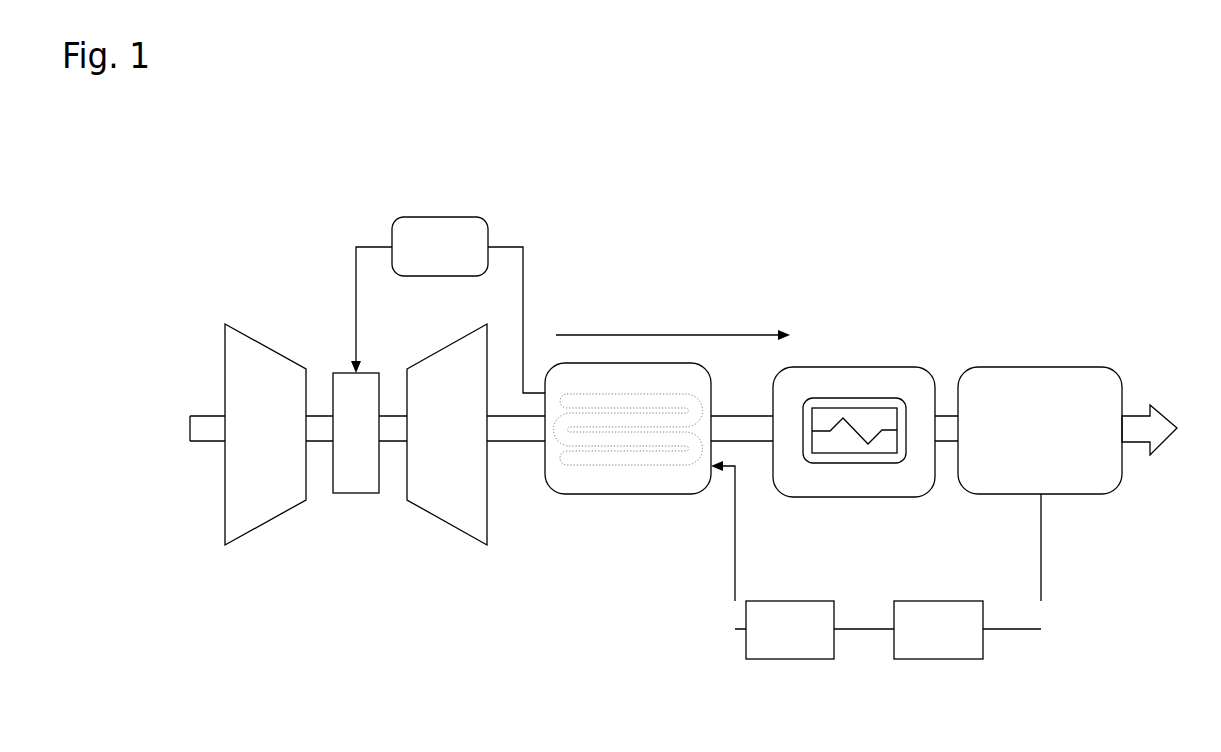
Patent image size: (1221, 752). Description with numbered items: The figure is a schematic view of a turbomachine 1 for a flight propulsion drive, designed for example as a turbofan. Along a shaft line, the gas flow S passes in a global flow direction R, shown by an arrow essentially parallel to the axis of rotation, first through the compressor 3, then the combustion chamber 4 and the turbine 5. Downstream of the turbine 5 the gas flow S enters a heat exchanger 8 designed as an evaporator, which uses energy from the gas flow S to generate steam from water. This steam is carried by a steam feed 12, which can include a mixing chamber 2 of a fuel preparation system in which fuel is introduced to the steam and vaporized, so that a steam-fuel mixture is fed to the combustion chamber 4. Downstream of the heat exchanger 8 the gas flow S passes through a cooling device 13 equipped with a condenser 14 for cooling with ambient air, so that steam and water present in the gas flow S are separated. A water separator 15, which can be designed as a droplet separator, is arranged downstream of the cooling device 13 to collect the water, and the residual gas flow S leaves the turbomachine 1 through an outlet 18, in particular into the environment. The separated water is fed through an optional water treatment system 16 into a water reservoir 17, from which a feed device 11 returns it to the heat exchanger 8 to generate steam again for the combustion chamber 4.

The turbomachine 1 is at (810, 160).
The mixing chamber 2 is at (419, 295).
The compressor 3 is at (267, 522).
The combustion chamber 4 is at (353, 493).
The turbine 5 is at (443, 522).
The heat exchanger 8 is at (625, 485).
The feed device 11 is at (863, 629).
The steam feed 12 is at (512, 245).
The cooling device 13 is at (855, 385).
The condenser 14 is at (855, 455).
The water separator 15 is at (1030, 378).
The water treatment system 16 is at (938, 630).
The water reservoir 17 is at (790, 630).
The outlet 18 is at (1146, 384).
The flow direction R is at (660, 333).
The gas flow S is at (523, 428).